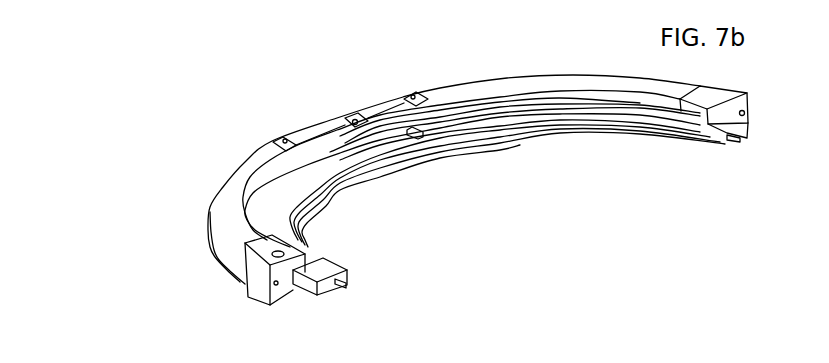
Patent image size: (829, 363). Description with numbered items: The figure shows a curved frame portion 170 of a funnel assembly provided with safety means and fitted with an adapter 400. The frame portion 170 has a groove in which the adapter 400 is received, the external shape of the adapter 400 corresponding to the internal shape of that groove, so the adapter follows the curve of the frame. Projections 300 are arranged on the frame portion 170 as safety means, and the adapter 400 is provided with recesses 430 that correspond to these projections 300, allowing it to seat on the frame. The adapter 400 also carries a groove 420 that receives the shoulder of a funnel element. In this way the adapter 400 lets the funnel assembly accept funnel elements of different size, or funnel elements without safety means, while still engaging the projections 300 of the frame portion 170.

The frame portion 170 is at (248, 166).
The projection 300 is at (426, 130).
The adapter 400 is at (549, 115).
The recess 430 is at (442, 132).
The groove 420 is at (348, 282).